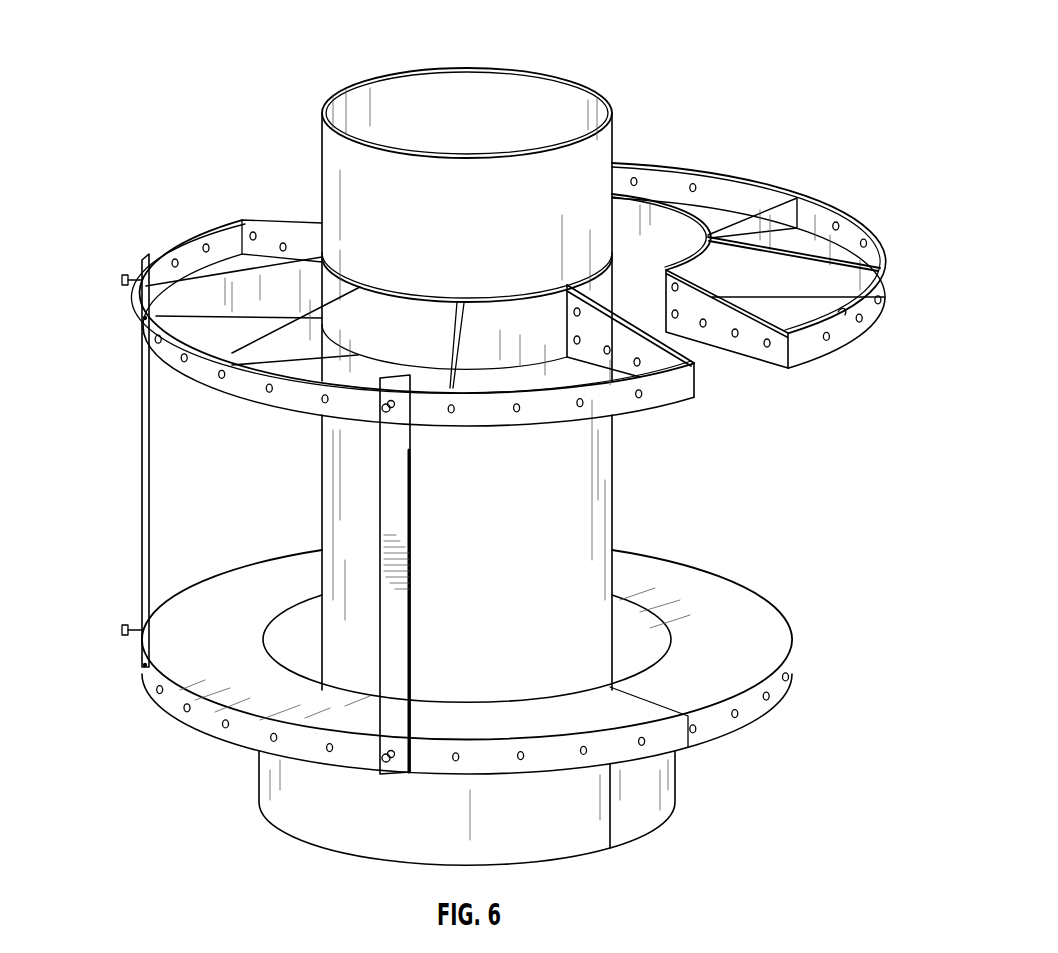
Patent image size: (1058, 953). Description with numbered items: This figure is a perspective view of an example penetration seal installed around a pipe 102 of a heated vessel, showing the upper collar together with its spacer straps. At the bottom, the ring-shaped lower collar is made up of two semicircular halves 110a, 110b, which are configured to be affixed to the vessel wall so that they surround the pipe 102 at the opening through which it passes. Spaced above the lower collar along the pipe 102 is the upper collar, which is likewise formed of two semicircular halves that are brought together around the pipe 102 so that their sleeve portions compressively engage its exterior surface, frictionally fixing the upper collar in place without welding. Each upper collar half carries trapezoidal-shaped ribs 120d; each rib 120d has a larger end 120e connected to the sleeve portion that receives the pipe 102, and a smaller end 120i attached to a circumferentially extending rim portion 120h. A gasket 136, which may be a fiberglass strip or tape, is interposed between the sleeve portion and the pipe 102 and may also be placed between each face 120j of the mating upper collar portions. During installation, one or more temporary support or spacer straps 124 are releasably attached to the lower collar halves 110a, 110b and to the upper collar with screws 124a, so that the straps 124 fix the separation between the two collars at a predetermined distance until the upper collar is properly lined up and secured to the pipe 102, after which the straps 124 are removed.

The pipe 102 is at (495, 67).
The lower collar half 110a is at (273, 813).
The lower collar half 110b is at (663, 790).
The trapezoidal-shaped rib 120d is at (800, 267).
The larger end of rib 120e is at (713, 247).
The rim portion 120h is at (805, 350).
The smaller end of rib 120i is at (833, 307).
The face of collar portion 120j is at (176, 346).
The strap 124 is at (141, 457).
The screw 124a is at (122, 629).
The gasket 136 is at (655, 193).